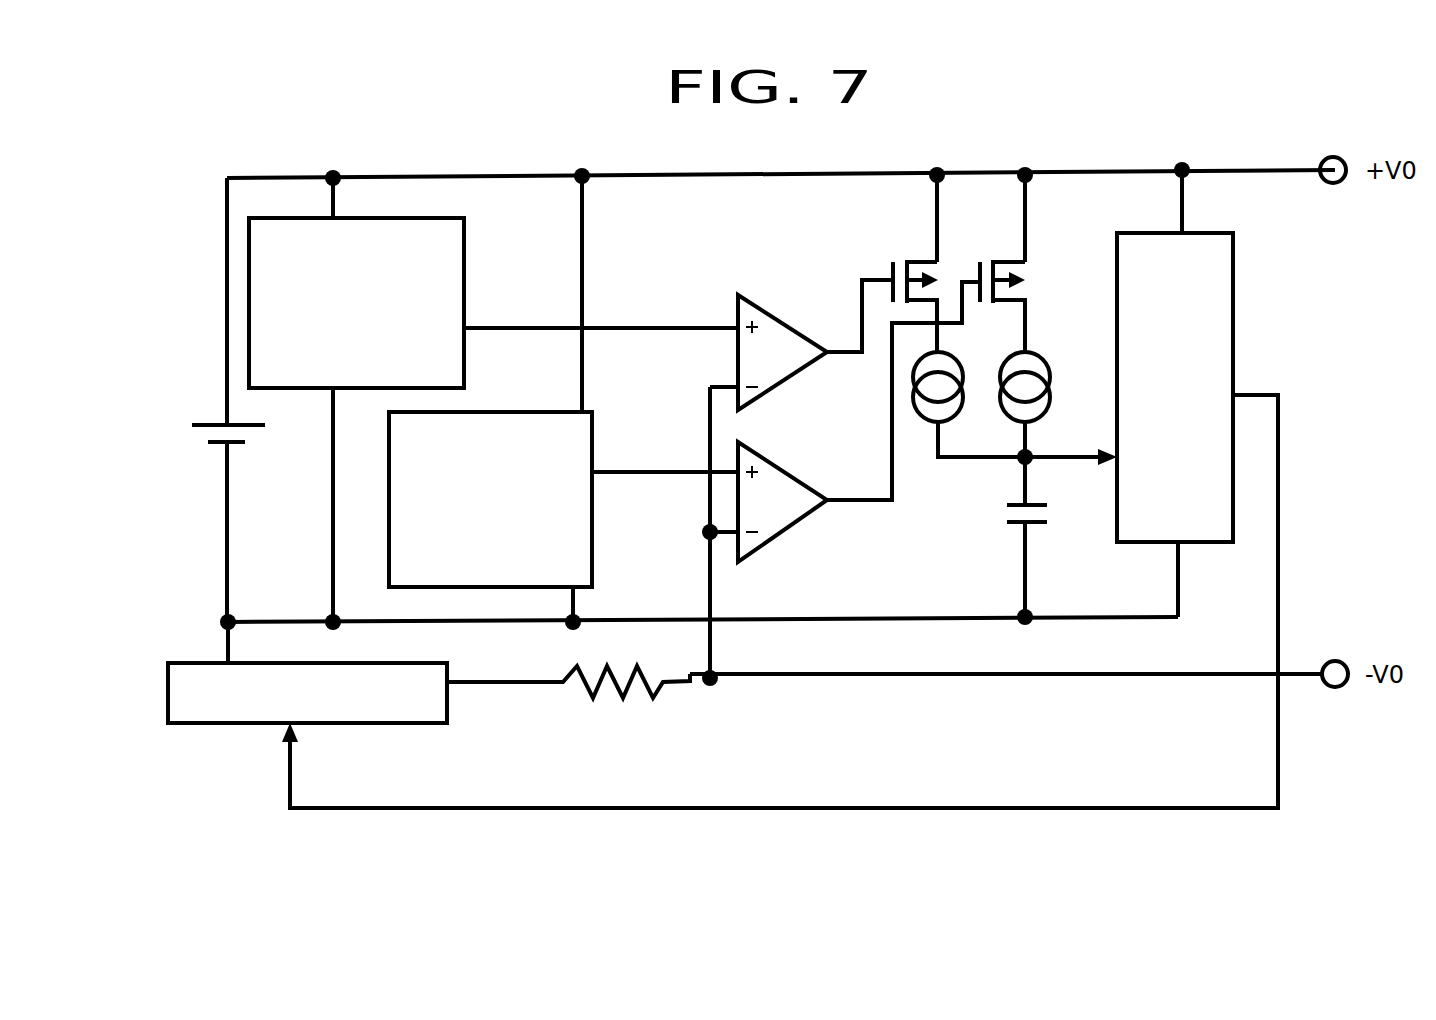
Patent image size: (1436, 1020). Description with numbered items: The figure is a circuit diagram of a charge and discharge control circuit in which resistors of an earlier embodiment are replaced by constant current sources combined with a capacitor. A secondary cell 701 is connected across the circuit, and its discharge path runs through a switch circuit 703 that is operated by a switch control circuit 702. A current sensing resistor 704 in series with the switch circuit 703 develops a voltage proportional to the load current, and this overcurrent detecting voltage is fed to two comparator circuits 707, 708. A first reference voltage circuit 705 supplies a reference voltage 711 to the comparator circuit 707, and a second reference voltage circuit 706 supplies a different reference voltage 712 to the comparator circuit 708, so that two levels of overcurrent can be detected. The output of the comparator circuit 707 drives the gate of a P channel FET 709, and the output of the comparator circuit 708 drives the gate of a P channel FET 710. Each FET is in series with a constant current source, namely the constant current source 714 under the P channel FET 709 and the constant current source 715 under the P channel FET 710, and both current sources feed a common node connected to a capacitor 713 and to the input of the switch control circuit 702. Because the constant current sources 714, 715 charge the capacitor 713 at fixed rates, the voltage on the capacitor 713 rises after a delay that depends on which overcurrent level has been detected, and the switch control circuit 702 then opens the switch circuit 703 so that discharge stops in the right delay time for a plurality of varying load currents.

The secondary cell 701 is at (188, 410).
The switch control circuit 702 is at (1245, 363).
The switch circuit 703 is at (368, 725).
The current sensing resistor 704 is at (618, 705).
The reference voltage circuit 705 is at (464, 272).
The reference voltage circuit 706 is at (627, 410).
The comparator circuit 707 is at (748, 297).
The comparator circuit 708 is at (807, 523).
The P channel FET 709 is at (947, 258).
The P channel FET 710 is at (1035, 263).
The reference voltage 711 is at (601, 303).
The reference voltage 712 is at (665, 451).
The capacitor 713 is at (995, 515).
The constant current source 714 is at (967, 392).
The constant current source 715 is at (1060, 380).